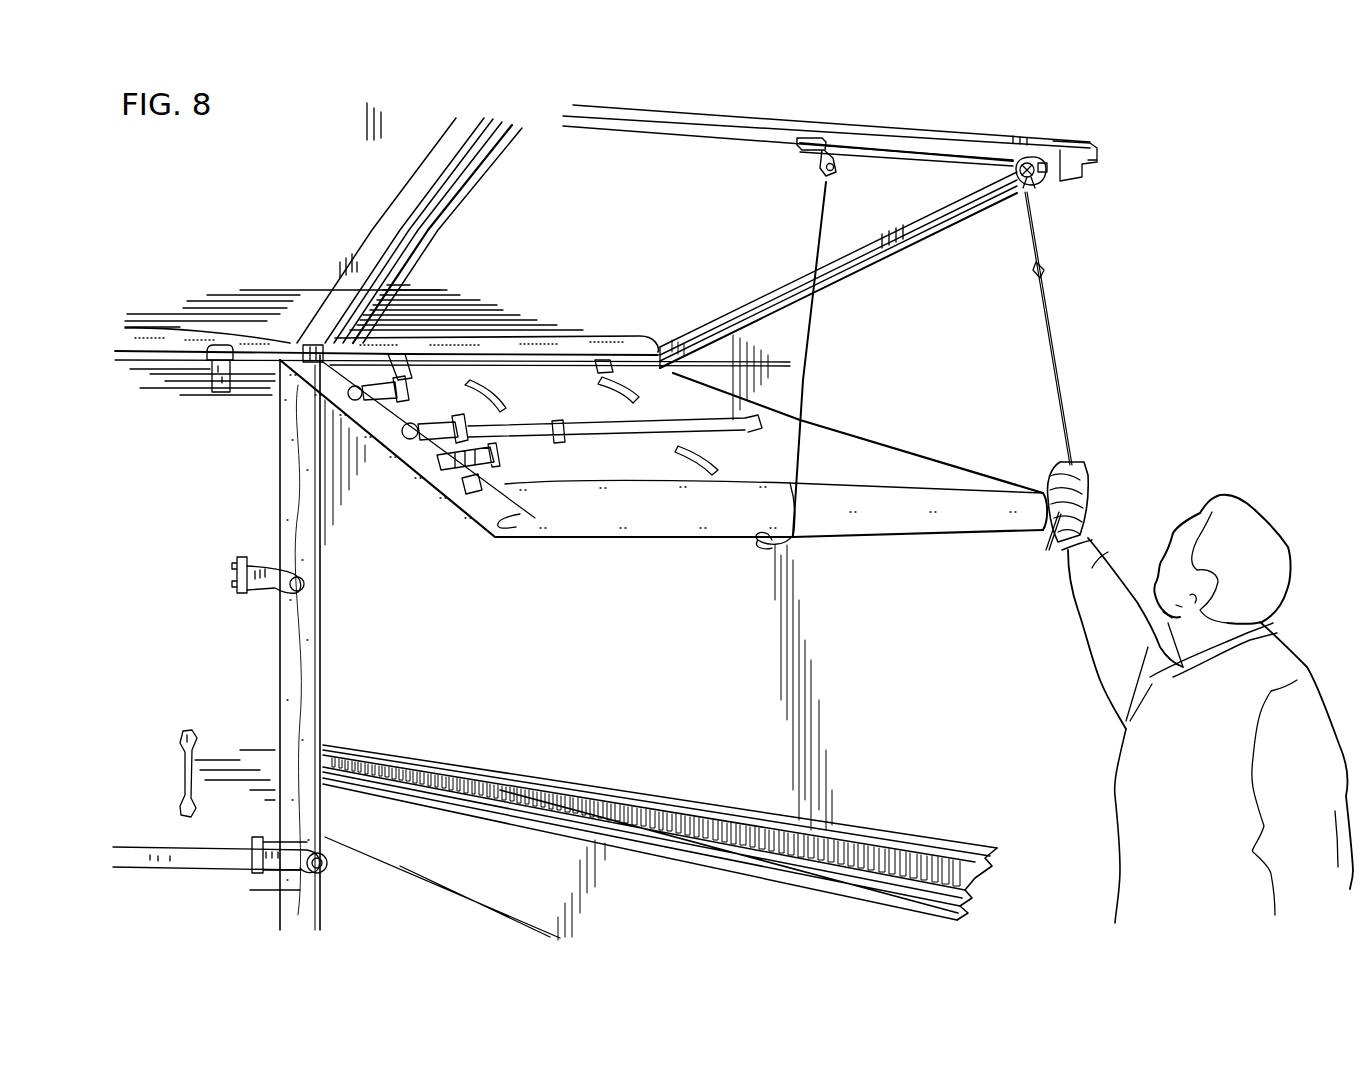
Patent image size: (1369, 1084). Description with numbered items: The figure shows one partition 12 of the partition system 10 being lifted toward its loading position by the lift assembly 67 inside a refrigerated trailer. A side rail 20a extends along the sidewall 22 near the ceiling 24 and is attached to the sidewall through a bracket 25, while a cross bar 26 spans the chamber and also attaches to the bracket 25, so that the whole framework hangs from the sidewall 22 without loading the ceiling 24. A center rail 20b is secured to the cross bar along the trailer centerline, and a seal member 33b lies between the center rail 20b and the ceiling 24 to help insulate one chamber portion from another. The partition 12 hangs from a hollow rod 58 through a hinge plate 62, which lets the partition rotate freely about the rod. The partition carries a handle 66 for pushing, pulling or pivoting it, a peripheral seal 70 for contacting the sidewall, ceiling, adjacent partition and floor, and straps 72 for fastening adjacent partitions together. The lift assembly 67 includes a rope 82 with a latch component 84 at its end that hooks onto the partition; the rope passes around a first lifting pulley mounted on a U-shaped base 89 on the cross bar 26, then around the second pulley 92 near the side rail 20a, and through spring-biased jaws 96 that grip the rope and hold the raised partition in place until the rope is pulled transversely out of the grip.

The partition system 10 is at (1126, 161).
The partition 12 is at (898, 533).
The side rail 20a is at (925, 230).
The center rail 20b is at (415, 198).
The sidewall 22 is at (525, 874).
The ceiling 24 is at (600, 211).
The bracket 25 is at (1047, 158).
The cross bar 26 is at (673, 121).
The seal member 33b is at (377, 231).
The hollow rod 58 is at (157, 362).
The hinge plate 62 is at (222, 394).
The handle 66 is at (185, 735).
The lift assembly 67 is at (1103, 197).
The peripheral seal 70 is at (172, 333).
The strap 72 is at (262, 566).
The rope 82 is at (1052, 322).
The latch component 84 is at (748, 548).
The U-shaped base 89 is at (797, 150).
The second pulley 92 is at (1046, 186).
The jaws 96 is at (826, 178).